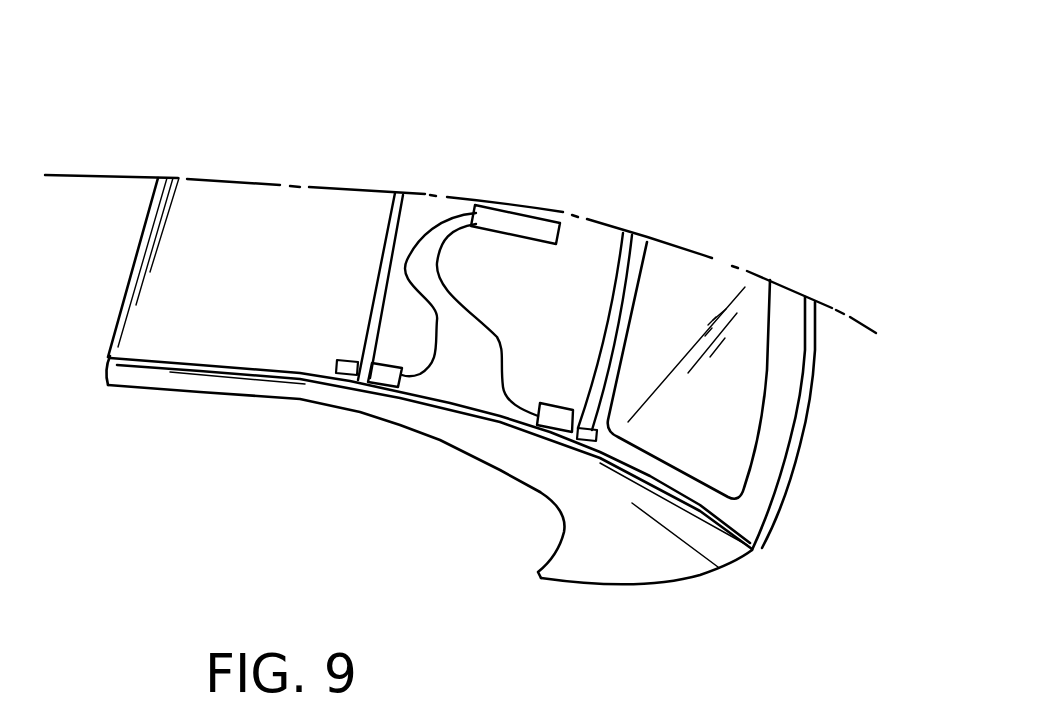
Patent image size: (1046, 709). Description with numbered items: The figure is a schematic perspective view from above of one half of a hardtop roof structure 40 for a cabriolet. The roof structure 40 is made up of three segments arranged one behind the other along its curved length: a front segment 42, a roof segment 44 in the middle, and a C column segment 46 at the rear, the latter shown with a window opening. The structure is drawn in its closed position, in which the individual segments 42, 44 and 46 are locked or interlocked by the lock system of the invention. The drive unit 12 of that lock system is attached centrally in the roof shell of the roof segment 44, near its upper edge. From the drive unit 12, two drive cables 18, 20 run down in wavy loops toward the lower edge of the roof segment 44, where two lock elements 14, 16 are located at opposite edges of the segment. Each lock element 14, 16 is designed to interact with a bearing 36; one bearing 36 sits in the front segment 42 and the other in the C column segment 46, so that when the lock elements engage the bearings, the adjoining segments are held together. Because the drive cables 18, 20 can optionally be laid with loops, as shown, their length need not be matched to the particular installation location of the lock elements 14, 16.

The roof structure 40 is at (718, 152).
The front segment 42 is at (292, 255).
The roof segment 44 is at (558, 295).
The C column segment 46 is at (637, 537).
The drive unit 12 is at (510, 217).
The lock element 14 is at (387, 388).
The lock element 16 is at (555, 430).
The drive cable 18 is at (440, 395).
The drive cable 20 is at (497, 392).
The bearing 36 is at (343, 374).